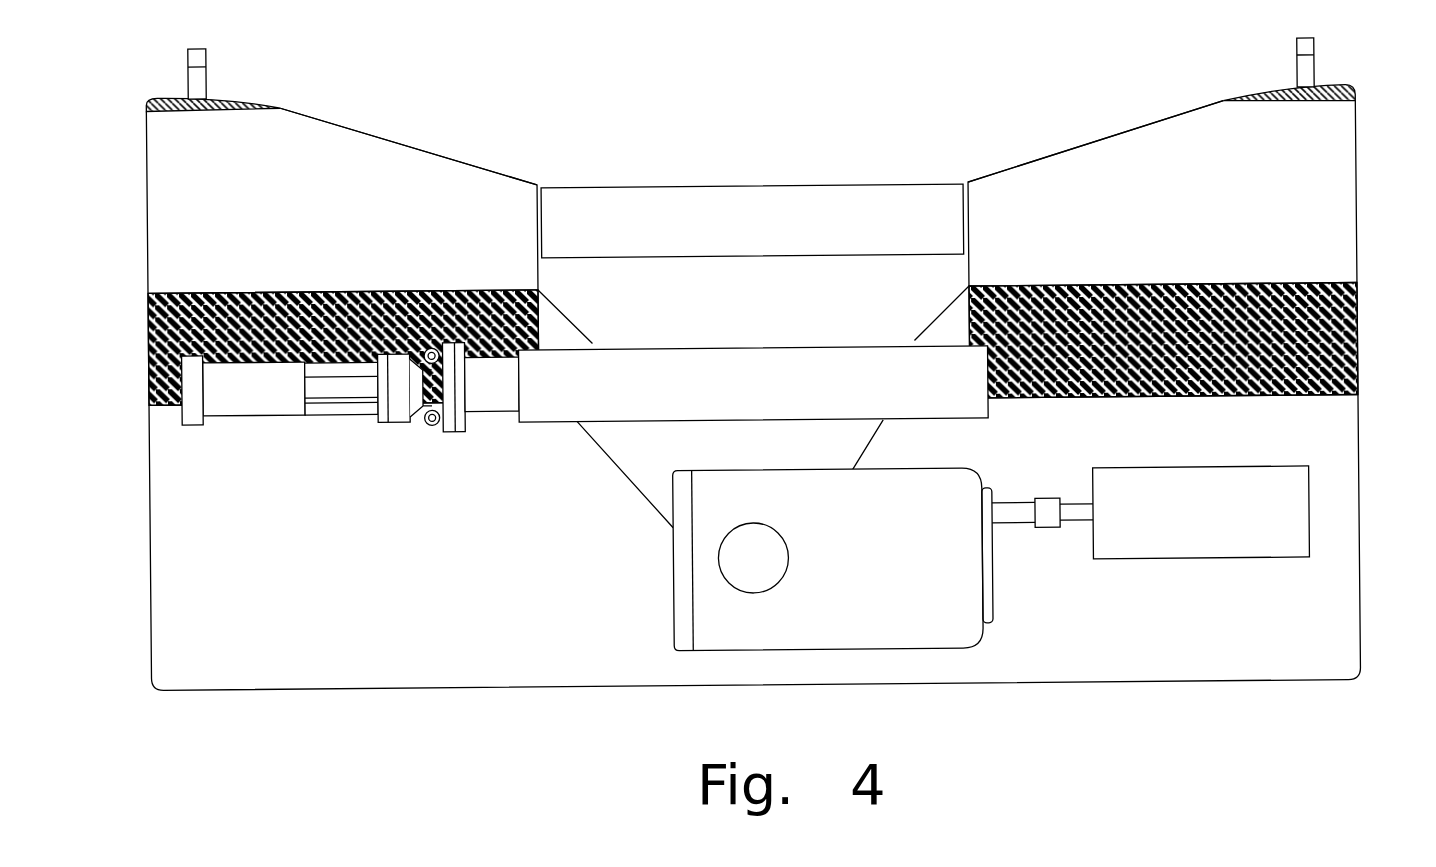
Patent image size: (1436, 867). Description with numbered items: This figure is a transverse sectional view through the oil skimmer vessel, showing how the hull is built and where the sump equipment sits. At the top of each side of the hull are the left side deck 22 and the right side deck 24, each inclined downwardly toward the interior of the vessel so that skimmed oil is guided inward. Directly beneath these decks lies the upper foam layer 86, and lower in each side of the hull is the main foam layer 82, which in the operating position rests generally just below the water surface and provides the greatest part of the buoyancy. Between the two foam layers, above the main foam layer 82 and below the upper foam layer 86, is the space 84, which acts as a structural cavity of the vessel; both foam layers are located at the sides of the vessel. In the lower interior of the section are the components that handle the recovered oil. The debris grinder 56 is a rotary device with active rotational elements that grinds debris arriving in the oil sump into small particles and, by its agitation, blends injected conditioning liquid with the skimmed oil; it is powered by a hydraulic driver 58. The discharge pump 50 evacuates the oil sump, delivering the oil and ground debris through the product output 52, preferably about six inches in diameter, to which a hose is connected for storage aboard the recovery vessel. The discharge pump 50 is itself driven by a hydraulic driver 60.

The left side deck 22 is at (378, 134).
The right side deck 24 is at (1130, 133).
The discharge pump 50 is at (898, 590).
The product output 52 is at (762, 550).
The debris grinder 56 is at (613, 401).
The hydraulic driver 58 is at (262, 396).
The hydraulic driver 60 is at (1282, 487).
The main foam layer 82 is at (149, 328).
The space 84 is at (324, 230).
The upper foam layer 86 is at (153, 97).